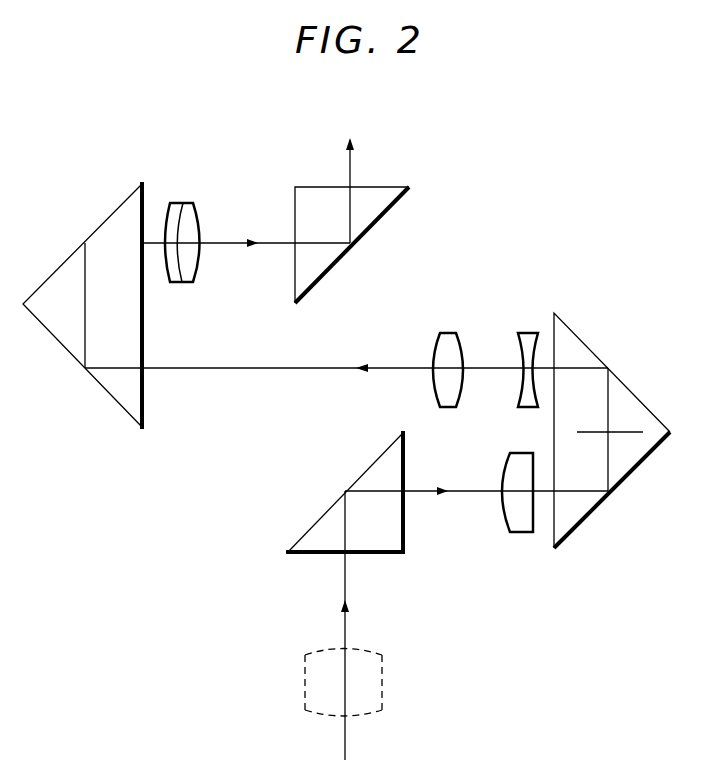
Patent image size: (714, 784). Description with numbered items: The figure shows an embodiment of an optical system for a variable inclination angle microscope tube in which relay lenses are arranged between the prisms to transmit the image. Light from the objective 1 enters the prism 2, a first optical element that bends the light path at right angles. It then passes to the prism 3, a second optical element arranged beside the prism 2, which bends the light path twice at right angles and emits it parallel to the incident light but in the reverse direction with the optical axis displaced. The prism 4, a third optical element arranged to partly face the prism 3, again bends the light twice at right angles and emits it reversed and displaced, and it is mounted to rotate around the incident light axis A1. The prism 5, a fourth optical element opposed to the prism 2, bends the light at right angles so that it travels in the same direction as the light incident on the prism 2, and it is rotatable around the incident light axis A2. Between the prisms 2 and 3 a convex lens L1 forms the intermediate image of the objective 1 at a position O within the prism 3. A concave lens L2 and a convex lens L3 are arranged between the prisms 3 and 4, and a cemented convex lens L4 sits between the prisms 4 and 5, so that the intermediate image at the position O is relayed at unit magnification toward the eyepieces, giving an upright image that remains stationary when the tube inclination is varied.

The objective 1 is at (305, 693).
The prism 2 is at (321, 513).
The prism 3 is at (628, 476).
The prism 4 is at (68, 259).
The prism 5 is at (388, 213).
The position O is at (610, 432).
The convex lens L1 is at (499, 507).
The concave lens L2 is at (525, 332).
The convex lens L3 is at (446, 332).
The cemented convex lens L4 is at (189, 204).
The incident light axis A1 is at (270, 370).
The incident light axis A2 is at (236, 247).